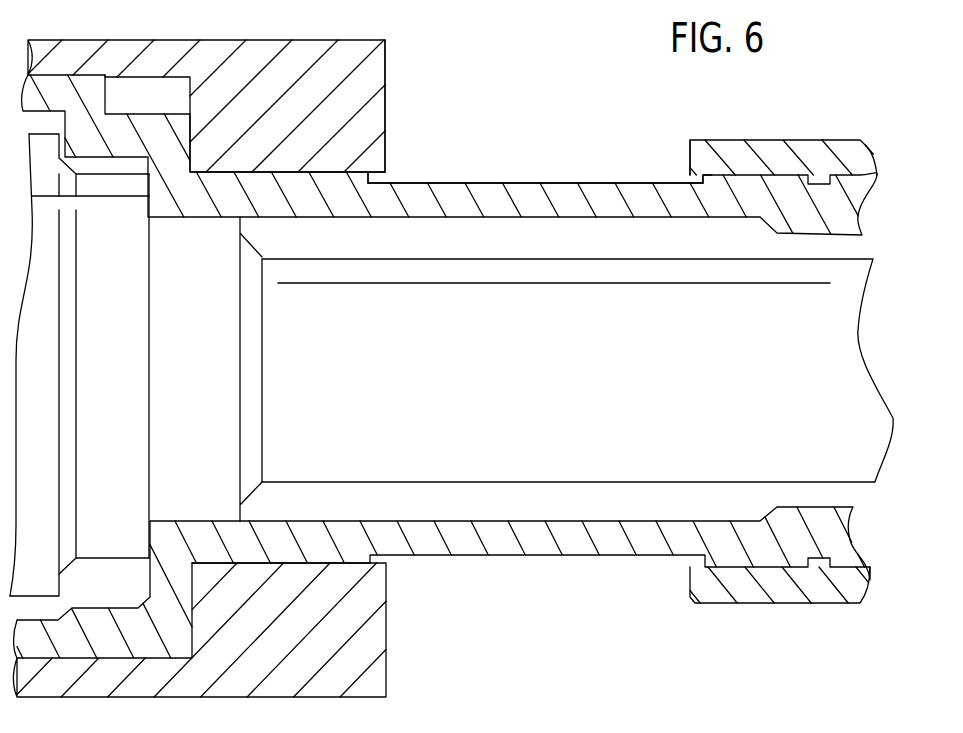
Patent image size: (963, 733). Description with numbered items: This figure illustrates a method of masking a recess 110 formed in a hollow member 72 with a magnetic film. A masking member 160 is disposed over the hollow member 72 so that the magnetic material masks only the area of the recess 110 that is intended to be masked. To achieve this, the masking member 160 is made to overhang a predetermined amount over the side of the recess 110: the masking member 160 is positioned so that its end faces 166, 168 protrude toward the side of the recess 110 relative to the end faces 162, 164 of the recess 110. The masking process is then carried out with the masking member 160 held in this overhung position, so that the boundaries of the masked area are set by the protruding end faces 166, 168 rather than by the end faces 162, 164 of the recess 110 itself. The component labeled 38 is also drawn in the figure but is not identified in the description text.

The tube 38 is at (878, 415).
The hollow member 72 is at (850, 205).
The recess 110 is at (487, 182).
The masking member 160 is at (386, 47).
The end face of the recess 162 is at (385, 173).
The end face of the recess 164 is at (700, 182).
The end face of the masking member 166 is at (387, 89).
The end face of the masking member 168 is at (690, 157).